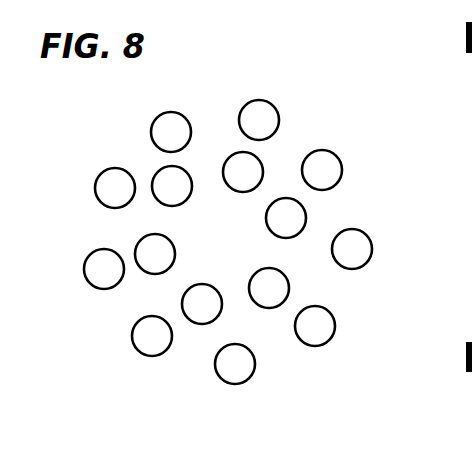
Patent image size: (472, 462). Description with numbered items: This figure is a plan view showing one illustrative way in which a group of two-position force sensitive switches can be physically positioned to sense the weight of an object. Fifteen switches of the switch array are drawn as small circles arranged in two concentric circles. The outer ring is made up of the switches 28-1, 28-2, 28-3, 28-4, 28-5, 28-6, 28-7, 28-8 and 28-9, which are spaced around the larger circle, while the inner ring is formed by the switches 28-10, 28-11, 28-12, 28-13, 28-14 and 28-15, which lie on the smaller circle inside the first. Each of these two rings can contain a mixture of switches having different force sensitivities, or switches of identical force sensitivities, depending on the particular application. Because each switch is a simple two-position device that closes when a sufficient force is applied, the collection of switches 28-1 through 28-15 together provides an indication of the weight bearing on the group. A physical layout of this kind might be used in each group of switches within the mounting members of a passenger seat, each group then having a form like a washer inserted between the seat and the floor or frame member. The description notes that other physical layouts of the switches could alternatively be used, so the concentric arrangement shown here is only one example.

The two-position force sensitive switch 28-1 is at (157, 118).
The two-position force sensitive switch 28-2 is at (277, 117).
The two-position force sensitive switch 28-3 is at (343, 170).
The two-position force sensitive switch 28-4 is at (370, 240).
The two-position force sensitive switch 28-5 is at (336, 319).
The two-position force sensitive switch 28-6 is at (233, 386).
The two-position force sensitive switch 28-7 is at (140, 354).
The two-position force sensitive switch 28-8 is at (95, 252).
The two-position force sensitive switch 28-9 is at (104, 171).
The two-position force sensitive switch 28-10 is at (259, 163).
The two-position force sensitive switch 28-11 is at (307, 218).
The two-position force sensitive switch 28-12 is at (279, 310).
The two-position force sensitive switch 28-13 is at (194, 324).
The two-position force sensitive switch 28-14 is at (147, 272).
The two-position force sensitive switch 28-15 is at (158, 175).